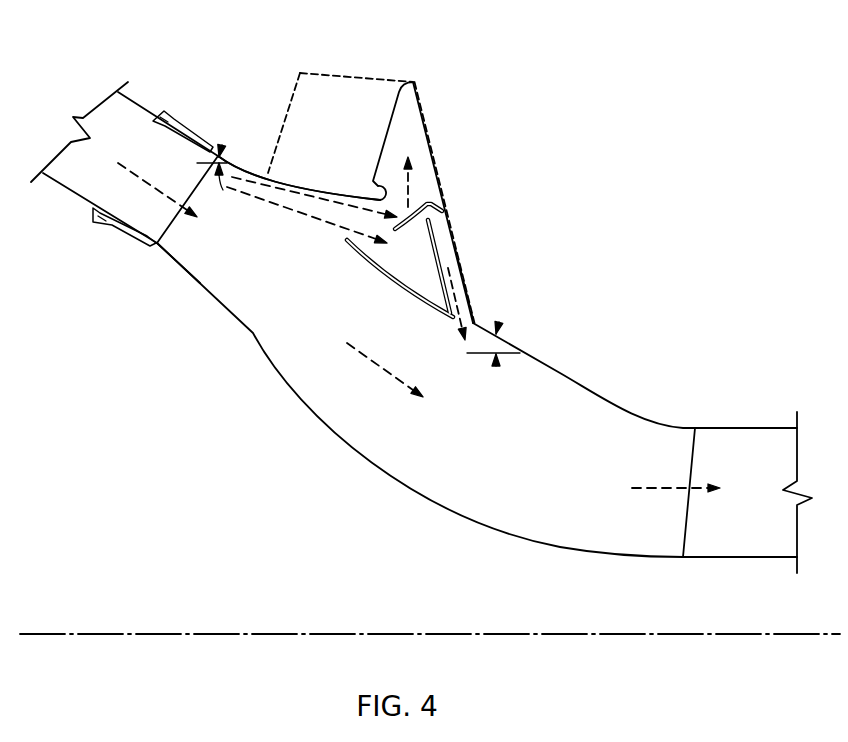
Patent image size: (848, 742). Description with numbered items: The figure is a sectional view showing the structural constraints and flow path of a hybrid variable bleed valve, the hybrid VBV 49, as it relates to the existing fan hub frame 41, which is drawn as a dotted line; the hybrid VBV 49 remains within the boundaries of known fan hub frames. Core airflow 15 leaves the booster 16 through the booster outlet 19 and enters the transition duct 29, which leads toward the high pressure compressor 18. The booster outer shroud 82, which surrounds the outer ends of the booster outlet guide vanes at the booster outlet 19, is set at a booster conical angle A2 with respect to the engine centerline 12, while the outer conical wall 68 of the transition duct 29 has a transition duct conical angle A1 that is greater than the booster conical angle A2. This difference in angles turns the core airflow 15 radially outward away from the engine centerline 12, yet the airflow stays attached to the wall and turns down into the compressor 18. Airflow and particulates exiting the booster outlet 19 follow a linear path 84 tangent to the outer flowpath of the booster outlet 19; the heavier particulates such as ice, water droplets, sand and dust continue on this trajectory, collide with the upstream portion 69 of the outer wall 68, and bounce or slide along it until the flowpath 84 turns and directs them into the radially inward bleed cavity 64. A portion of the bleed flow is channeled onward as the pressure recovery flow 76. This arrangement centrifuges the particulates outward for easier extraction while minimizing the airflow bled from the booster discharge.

The engine centerline 12 is at (83, 632).
The core airflow 15 is at (199, 222).
The booster 16 is at (103, 148).
The high pressure compressor 18 is at (738, 500).
The booster outlet 19 is at (170, 248).
The transition duct 29 is at (508, 465).
The fan hub frame 41 is at (352, 73).
The hybrid VBV 49 is at (435, 277).
The radially inward bleed cavity 64 is at (420, 266).
The outer conical wall 68 is at (547, 366).
The upstream portion 69 is at (247, 168).
The pressure recovery flow 76 is at (473, 288).
The booster outer shroud 82 is at (130, 99).
The path 84 is at (273, 193).
The transition duct conical angle A1 is at (507, 307).
The booster conical angle A2 is at (222, 145).